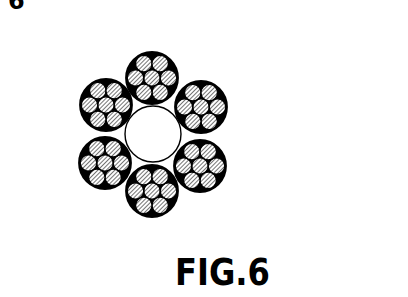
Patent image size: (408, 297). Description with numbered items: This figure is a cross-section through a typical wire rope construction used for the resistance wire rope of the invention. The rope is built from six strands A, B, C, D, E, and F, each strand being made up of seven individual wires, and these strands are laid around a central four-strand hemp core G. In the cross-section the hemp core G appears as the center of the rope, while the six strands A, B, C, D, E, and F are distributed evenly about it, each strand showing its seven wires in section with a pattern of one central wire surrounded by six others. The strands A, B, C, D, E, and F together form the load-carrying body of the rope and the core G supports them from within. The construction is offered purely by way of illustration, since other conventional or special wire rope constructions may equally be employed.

The strand A is at (171, 61).
The strand B is at (85, 92).
The strand C is at (224, 104).
The strand D is at (81, 171).
The strand E is at (224, 163).
The strand F is at (150, 218).
The hemp core G is at (174, 140).